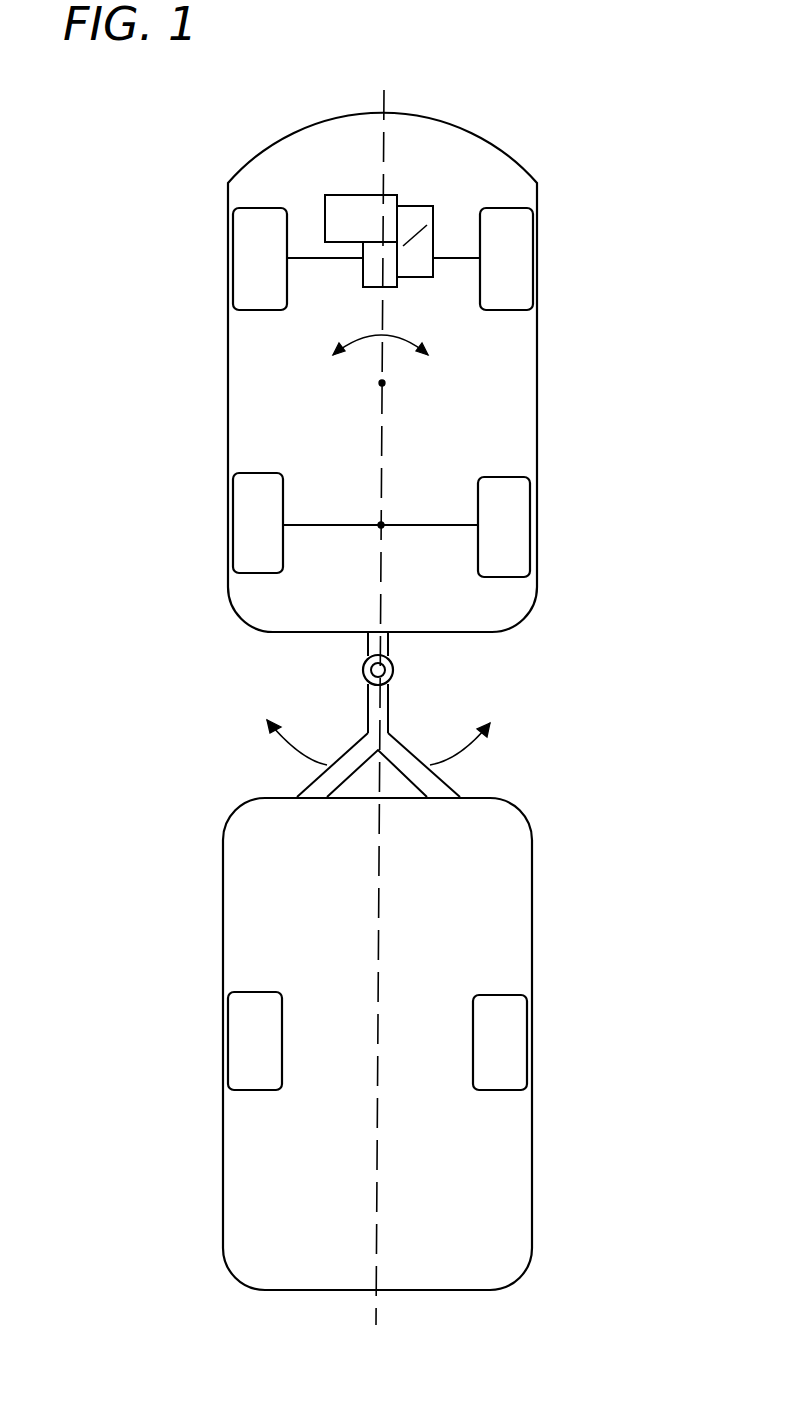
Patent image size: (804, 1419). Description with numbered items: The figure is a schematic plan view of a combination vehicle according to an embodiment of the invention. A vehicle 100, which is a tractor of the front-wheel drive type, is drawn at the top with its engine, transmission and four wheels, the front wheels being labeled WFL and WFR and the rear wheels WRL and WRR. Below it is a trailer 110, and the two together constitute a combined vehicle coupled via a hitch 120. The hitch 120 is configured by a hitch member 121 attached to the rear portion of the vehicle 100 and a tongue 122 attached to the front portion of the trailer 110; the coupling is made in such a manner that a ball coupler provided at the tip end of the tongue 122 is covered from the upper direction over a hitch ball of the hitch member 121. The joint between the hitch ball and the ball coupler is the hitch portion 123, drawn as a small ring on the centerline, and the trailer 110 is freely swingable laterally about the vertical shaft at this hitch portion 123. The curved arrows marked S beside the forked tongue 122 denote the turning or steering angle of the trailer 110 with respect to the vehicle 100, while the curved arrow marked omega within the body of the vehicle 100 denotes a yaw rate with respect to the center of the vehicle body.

The vehicle 100 is at (553, 418).
The trailer 110 is at (550, 925).
The hitch 120 is at (397, 714).
The hitch member 121 is at (388, 652).
The tongue 122 is at (367, 690).
The hitch portion 123 is at (363, 670).
The front left wheel WFL is at (248, 256).
The front right wheel WFR is at (520, 257).
The rear left wheel WRL is at (248, 525).
The rear right wheel WRR is at (520, 527).